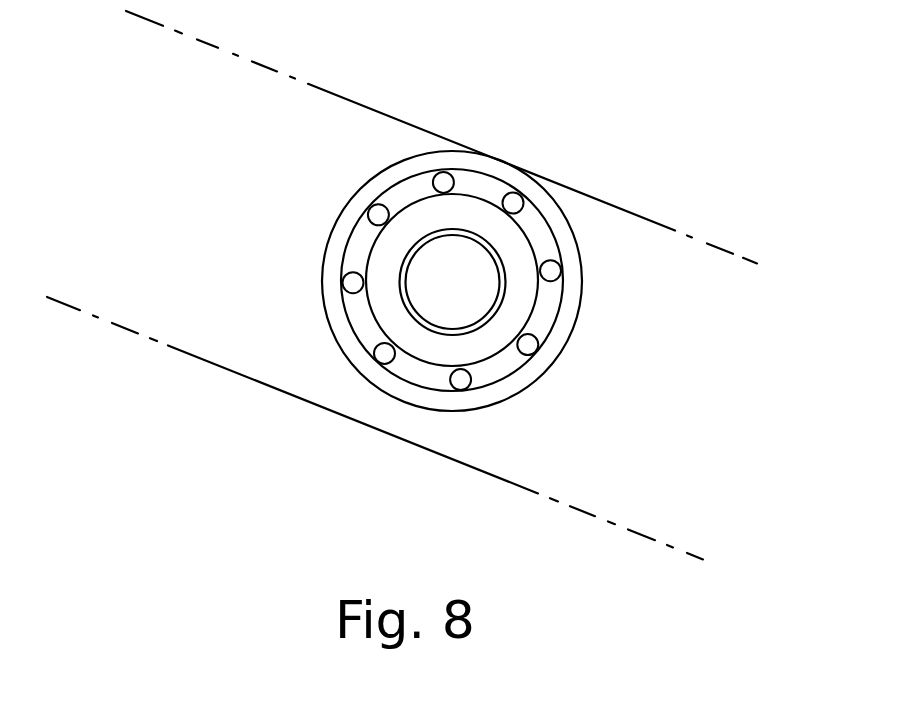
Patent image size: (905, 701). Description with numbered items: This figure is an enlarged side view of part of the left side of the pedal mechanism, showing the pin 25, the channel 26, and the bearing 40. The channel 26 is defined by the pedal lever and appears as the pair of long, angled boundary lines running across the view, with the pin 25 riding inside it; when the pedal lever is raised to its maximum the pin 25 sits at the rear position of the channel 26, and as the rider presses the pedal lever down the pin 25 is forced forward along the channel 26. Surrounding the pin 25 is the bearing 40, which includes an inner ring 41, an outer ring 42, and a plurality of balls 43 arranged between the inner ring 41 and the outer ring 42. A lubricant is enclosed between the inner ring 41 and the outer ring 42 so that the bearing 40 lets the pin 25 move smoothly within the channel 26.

The pin 25 is at (453, 282).
The channel 26 is at (612, 208).
The bearing 40 is at (330, 233).
The inner ring 41 is at (452, 280).
The outer ring 42 is at (345, 325).
The balls 43 is at (352, 278).